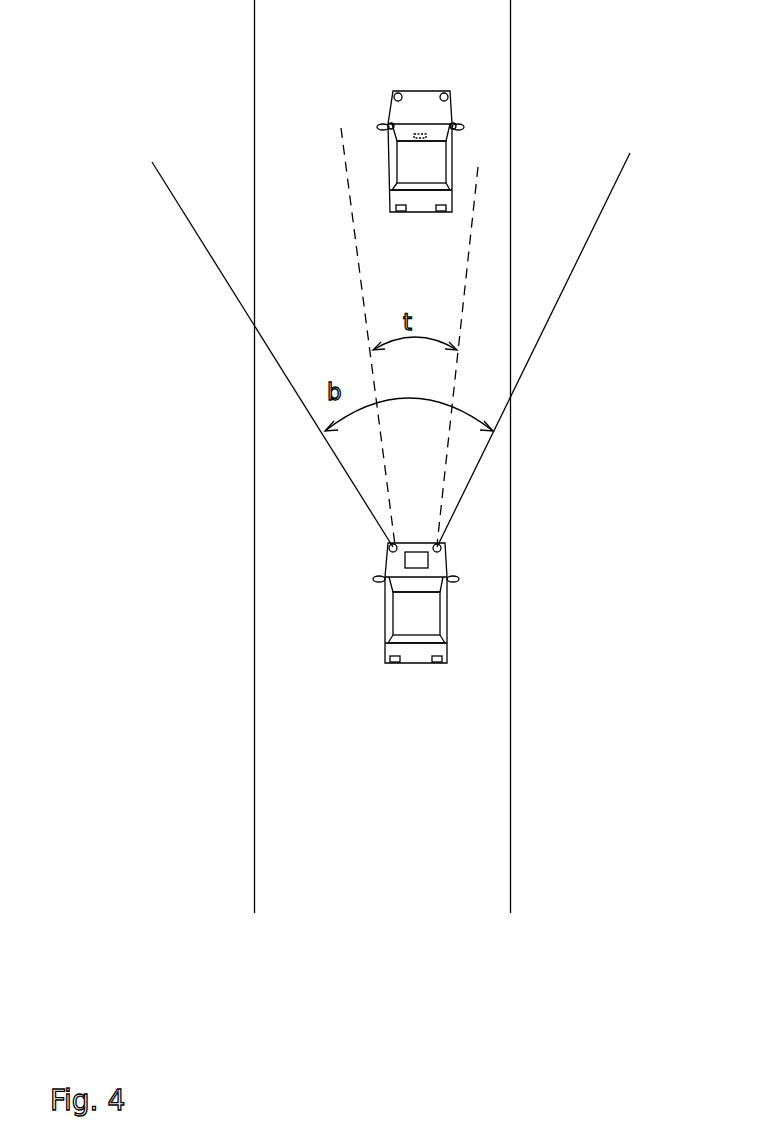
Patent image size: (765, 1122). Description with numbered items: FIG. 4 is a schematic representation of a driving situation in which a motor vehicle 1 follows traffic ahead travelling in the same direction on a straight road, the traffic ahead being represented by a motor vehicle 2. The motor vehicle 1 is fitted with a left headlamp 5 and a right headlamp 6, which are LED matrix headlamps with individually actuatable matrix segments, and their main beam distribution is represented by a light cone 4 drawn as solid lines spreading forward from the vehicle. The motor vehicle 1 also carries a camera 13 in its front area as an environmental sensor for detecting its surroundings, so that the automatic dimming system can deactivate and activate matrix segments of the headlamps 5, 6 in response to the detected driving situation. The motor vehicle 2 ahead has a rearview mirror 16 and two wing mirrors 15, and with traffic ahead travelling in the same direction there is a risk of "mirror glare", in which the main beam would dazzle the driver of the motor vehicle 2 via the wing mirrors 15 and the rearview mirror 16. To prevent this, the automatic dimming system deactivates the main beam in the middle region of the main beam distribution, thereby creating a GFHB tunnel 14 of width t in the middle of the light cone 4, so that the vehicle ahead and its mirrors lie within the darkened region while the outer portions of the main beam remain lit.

The motor vehicle 1 is at (460, 618).
The motor vehicle 2 is at (475, 67).
The light cone 4 is at (541, 340).
The left headlamp 5 is at (390, 549).
The right headlamp 6 is at (442, 548).
The camera 13 is at (424, 560).
The GFHB tunnel 14 is at (466, 288).
The wing mirrors 15 is at (390, 127).
The rearview mirror 16 is at (452, 136).